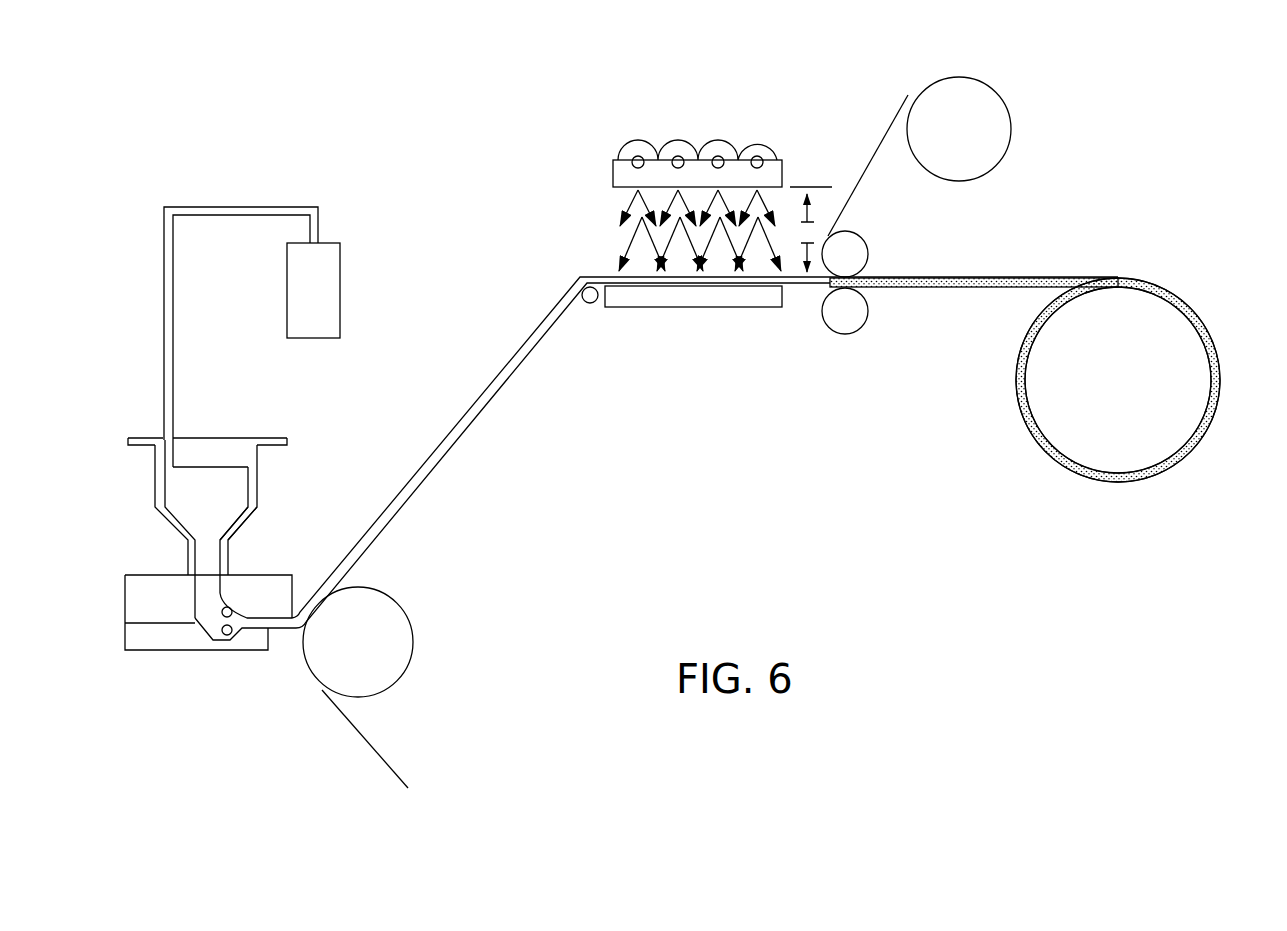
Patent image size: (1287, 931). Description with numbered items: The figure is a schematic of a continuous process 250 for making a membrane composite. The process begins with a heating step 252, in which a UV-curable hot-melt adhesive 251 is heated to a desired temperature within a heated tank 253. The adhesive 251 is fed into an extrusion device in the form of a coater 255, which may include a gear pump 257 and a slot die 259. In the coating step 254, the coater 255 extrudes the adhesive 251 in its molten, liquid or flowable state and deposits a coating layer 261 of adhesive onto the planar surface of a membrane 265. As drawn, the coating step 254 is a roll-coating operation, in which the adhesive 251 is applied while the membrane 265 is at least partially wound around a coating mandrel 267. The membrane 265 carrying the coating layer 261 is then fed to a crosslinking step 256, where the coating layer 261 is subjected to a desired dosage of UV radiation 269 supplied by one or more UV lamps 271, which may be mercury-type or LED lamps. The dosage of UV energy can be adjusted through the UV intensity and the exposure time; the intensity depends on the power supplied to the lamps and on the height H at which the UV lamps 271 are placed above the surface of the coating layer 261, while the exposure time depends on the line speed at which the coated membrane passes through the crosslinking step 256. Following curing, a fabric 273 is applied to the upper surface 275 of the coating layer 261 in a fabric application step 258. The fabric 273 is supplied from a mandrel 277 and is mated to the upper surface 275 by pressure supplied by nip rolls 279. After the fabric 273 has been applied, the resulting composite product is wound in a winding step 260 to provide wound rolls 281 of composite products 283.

The continuous process 250 is at (534, 144).
The UV-curable hot-melt adhesive 251 is at (238, 466).
The heating step 252 is at (343, 467).
The heated tank 253 is at (250, 520).
The coating step 254 is at (271, 682).
The coater 255 is at (143, 652).
The crosslinking step 256 is at (590, 174).
The gear pump 257 is at (225, 634).
The fabric application step 258 is at (873, 130).
The slot die 259 is at (263, 617).
The winding step 260 is at (1016, 431).
The coating layer 261 is at (387, 512).
The membrane 265 is at (368, 743).
The coating mandrel 267 is at (397, 600).
The UV radiation 269 is at (627, 237).
The UV lamps 271 is at (722, 138).
The fabric 273 is at (858, 192).
The upper surface 275 is at (820, 278).
The mandrel 277 is at (1008, 108).
The nip rolls 279 is at (828, 337).
The wound rolls 281 is at (1105, 472).
The composite products 283 is at (984, 277).
The height H is at (811, 229).